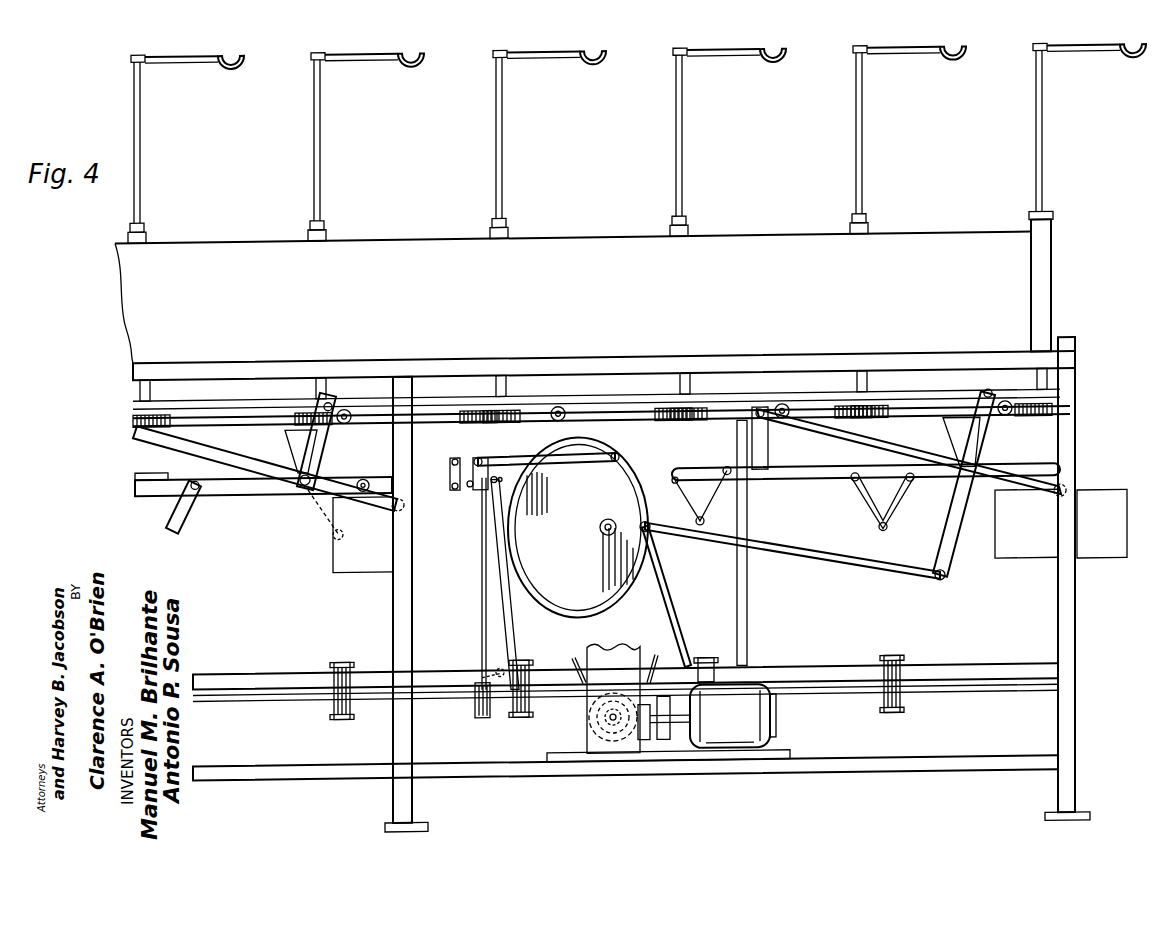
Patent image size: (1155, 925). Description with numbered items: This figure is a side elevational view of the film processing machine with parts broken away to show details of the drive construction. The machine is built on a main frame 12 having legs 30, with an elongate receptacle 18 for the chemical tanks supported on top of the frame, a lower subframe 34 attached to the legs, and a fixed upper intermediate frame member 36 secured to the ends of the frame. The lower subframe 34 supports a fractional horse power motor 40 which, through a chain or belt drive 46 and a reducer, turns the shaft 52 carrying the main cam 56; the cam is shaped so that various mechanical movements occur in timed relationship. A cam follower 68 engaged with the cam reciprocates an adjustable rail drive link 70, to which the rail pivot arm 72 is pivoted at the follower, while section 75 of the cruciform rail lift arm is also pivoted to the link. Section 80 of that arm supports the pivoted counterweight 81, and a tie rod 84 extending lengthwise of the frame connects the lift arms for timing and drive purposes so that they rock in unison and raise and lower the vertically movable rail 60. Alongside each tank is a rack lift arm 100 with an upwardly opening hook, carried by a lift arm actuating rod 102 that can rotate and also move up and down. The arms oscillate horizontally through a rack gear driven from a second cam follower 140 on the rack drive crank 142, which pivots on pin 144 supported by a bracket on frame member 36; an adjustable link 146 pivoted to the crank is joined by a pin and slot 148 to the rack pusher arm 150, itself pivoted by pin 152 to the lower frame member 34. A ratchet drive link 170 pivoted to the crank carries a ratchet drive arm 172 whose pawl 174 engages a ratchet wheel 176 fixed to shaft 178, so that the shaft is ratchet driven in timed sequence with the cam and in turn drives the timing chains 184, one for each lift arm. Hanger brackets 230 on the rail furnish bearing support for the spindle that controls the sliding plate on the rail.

The main frame 12 is at (1082, 449).
The elongate receptacle 18 is at (1005, 321).
The legs 30 is at (1065, 754).
The lower subframe 34 is at (822, 678).
The upper intermediate frame member 36 is at (363, 442).
The fractional horse power motor 40 is at (776, 725).
The chain or belt drive 46 is at (662, 749).
The shaft 52 is at (605, 541).
The main cam 56 is at (605, 608).
The vertically movable rail 60 is at (805, 493).
The cam follower 68 is at (652, 542).
The adjustable rail drive link 70 is at (840, 571).
The rail pivot arm 72 is at (683, 627).
The section of rail lift arm 75 is at (950, 563).
The section of rail lift arm 80 is at (978, 453).
The pivoted counterweight 81 is at (1117, 560).
The tie rod 84 is at (903, 407).
The rack lift arm 100 is at (717, 69).
The lift arm actuating rod 102 is at (680, 177).
The cam follower 140 is at (619, 465).
The rack drive crank 142 is at (590, 471).
The pin 144 is at (458, 464).
The adjustable link 146 is at (470, 494).
The pin and slot 148 is at (494, 488).
The rack pusher arm 150 is at (505, 632).
The pin 152 is at (496, 678).
The ratchet drive link 170 is at (502, 487).
The ratchet drive arm 172 is at (482, 598).
The pawl 174 is at (478, 686).
The ratchet wheel 176 is at (486, 724).
The shaft 178 is at (265, 707).
The timing chains 184 is at (530, 712).
The hanger bracket 230 is at (895, 517).